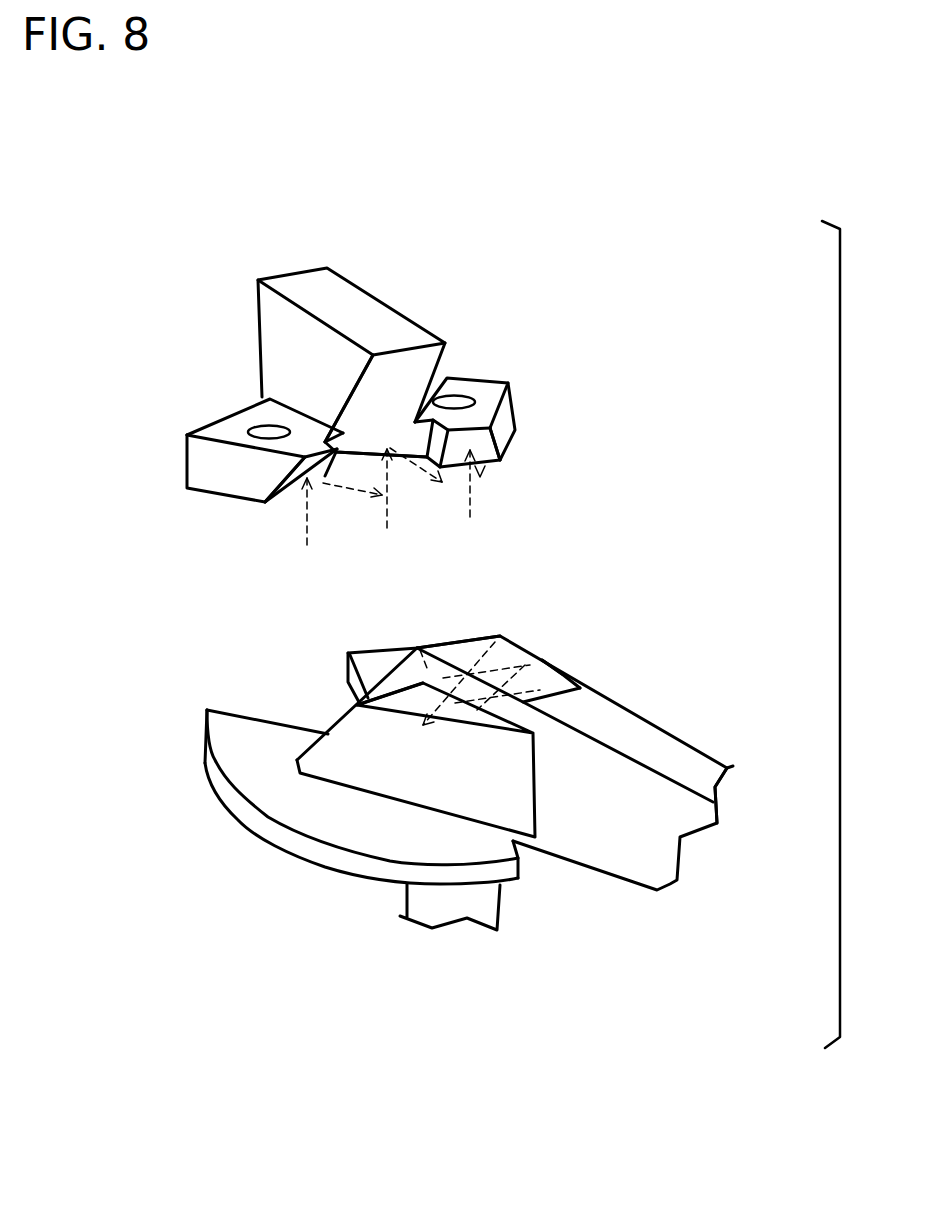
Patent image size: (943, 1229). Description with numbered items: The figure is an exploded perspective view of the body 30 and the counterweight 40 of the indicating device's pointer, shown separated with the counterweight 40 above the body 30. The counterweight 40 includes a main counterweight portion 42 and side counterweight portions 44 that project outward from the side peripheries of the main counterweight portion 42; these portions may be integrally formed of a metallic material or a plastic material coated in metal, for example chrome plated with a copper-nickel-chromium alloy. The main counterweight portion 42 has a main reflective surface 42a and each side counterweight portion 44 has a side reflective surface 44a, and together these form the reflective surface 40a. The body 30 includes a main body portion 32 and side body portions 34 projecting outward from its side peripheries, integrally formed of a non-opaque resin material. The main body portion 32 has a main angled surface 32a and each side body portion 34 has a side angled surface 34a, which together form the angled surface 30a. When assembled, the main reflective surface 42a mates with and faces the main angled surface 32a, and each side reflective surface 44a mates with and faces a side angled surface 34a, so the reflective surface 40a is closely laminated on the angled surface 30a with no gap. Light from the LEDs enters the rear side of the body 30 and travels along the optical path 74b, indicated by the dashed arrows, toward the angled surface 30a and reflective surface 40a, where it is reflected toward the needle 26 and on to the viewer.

The needle 26 is at (712, 779).
The body 30 is at (477, 945).
The angled surface 30a is at (347, 652).
The main body portion 32 is at (650, 757).
The main angled surface 32a is at (418, 645).
The side body portion 34 is at (380, 778).
The side angled surface 34a is at (337, 717).
The counterweight 40 is at (338, 267).
The reflective surface 40a is at (454, 513).
The main counterweight portion 42 is at (340, 305).
The main reflective surface 42a is at (382, 412).
The side counterweight portion 44 is at (232, 478).
The side reflective surface 44a is at (298, 483).
The optical path 74b is at (307, 533).